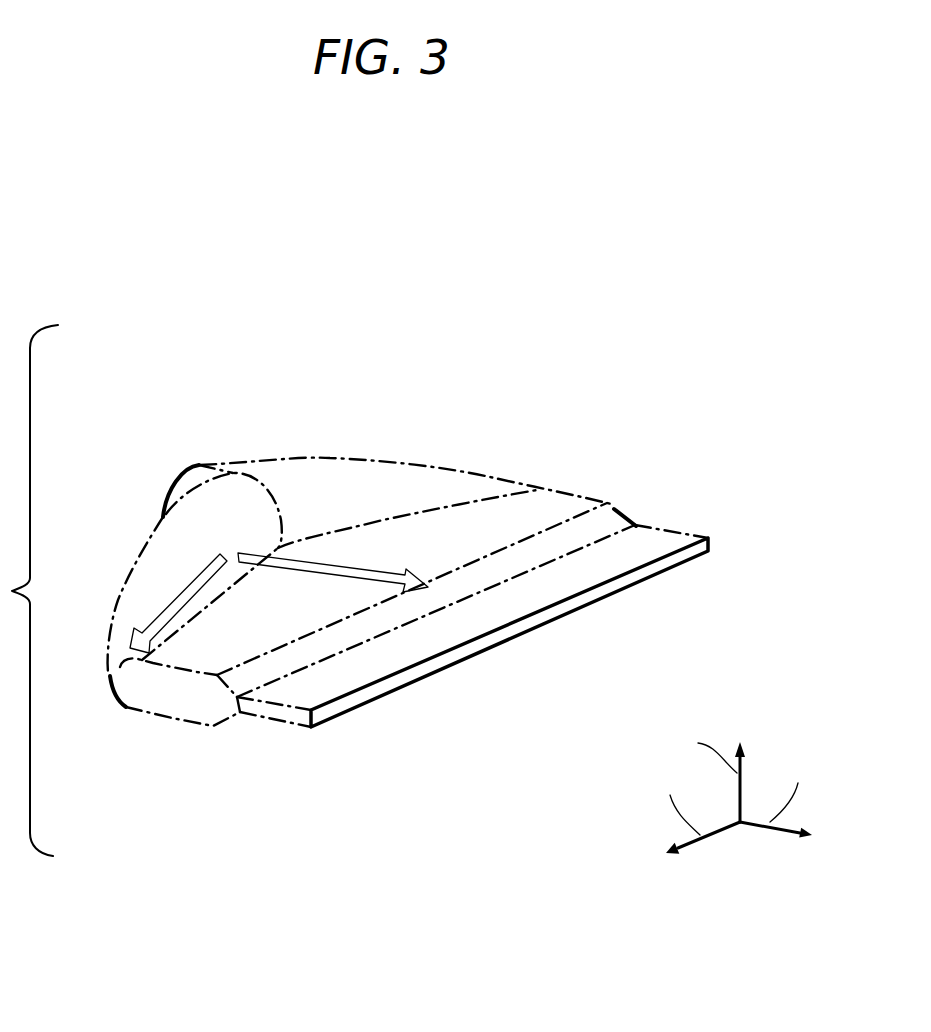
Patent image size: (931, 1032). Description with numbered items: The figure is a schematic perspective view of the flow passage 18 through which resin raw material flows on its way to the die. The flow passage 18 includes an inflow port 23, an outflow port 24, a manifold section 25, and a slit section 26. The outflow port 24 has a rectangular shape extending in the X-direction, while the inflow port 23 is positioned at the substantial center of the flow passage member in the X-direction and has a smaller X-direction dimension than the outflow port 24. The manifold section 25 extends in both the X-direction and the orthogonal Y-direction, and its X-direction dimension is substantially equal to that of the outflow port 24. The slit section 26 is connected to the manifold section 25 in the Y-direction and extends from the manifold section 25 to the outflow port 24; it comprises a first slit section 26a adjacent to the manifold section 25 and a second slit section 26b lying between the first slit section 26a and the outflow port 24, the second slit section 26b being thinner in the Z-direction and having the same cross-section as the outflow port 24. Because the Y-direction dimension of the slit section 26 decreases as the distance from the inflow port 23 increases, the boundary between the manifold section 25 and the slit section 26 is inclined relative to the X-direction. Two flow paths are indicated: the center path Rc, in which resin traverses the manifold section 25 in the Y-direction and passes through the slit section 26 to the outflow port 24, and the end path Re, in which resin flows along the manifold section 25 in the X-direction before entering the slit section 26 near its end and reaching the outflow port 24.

The flow passage 18 is at (232, 412).
The inflow port 23 is at (180, 472).
The outflow port 24 is at (634, 586).
The manifold section 25 is at (315, 477).
The slit section 26 is at (717, 440).
The first slit section 26a is at (538, 491).
The second slit section 26b is at (640, 525).
The end path Re is at (160, 615).
The center path Rc is at (312, 570).